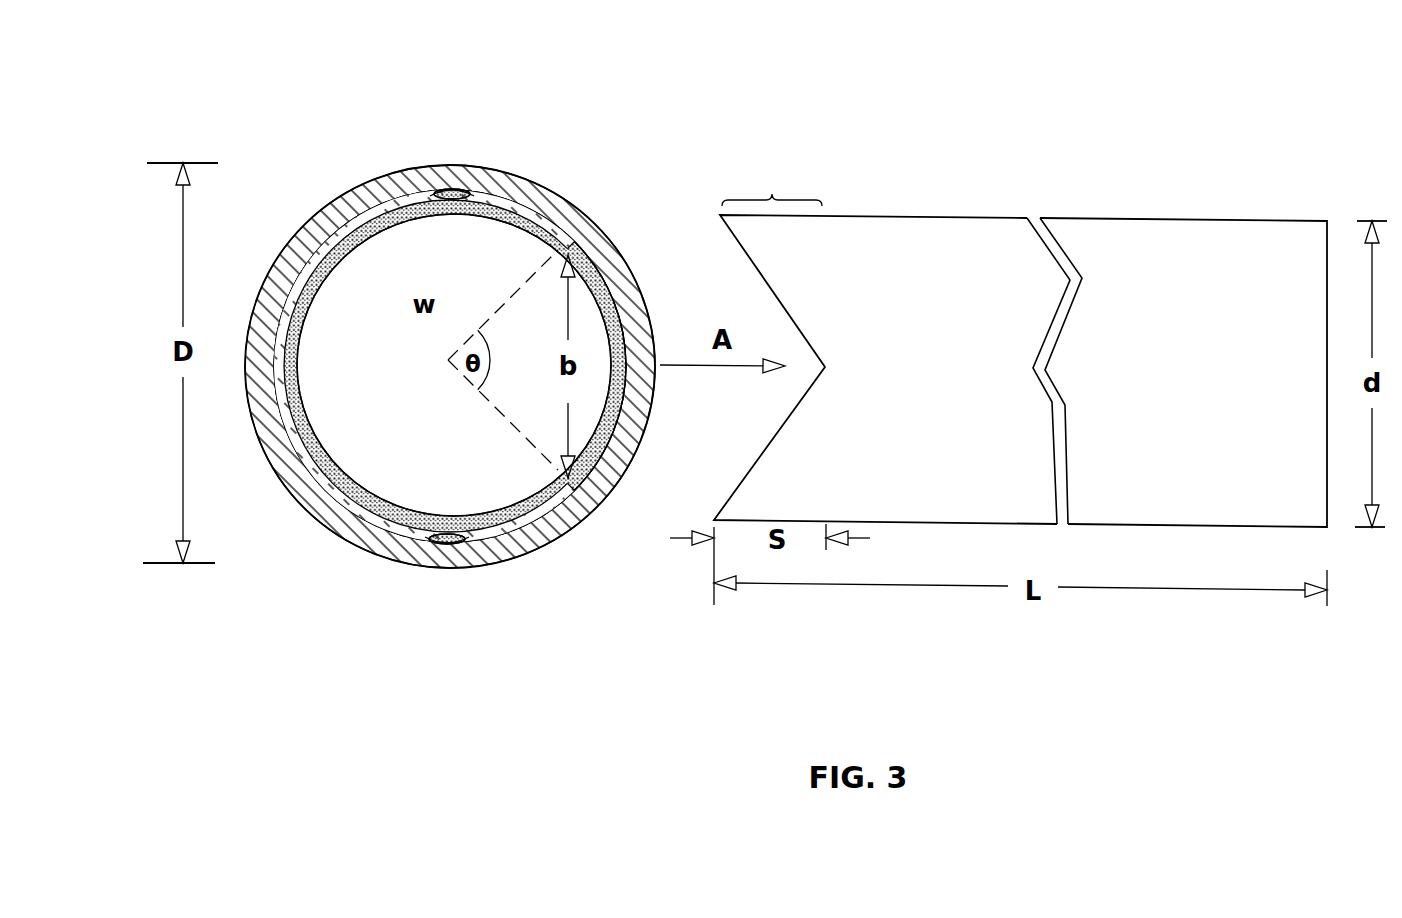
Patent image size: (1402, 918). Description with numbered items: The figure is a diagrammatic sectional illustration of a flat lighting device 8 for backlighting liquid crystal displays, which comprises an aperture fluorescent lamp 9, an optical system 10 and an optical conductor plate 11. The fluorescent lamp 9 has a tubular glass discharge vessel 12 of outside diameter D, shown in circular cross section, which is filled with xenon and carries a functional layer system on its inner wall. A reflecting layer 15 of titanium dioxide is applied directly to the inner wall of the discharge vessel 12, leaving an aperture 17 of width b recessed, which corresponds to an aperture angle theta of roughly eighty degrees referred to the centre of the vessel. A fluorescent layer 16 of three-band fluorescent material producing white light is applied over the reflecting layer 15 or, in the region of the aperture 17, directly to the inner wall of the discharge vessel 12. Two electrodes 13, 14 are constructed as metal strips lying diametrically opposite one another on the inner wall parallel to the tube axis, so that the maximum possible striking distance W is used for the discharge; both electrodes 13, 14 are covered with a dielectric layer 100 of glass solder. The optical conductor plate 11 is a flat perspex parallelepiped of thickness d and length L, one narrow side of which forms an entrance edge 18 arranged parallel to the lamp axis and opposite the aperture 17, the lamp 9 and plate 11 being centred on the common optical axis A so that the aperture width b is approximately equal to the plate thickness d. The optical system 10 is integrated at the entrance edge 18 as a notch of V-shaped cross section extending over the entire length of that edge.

The flat lighting device 8 is at (1083, 139).
The aperture fluorescent lamp 9 is at (572, 164).
The optical system 10 is at (772, 185).
The optical conductor plate 11 is at (945, 195).
The tubular discharge vessel 12 is at (537, 548).
The electrode 13 is at (452, 190).
The electrode 14 is at (445, 542).
The reflecting layer 15 is at (333, 498).
The fluorescent layer 16 is at (370, 230).
The aperture 17 is at (653, 243).
The entrance edge 18 is at (732, 437).
The dielectric layer 100 is at (427, 195).